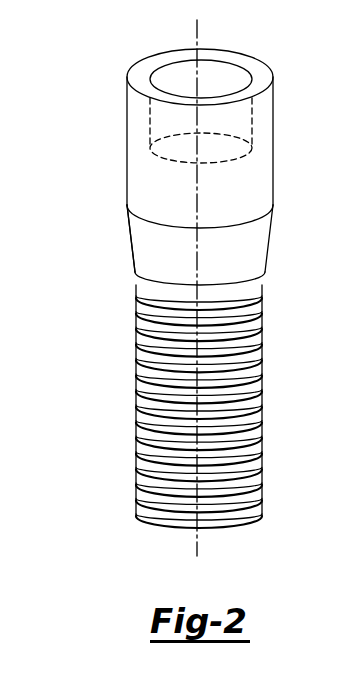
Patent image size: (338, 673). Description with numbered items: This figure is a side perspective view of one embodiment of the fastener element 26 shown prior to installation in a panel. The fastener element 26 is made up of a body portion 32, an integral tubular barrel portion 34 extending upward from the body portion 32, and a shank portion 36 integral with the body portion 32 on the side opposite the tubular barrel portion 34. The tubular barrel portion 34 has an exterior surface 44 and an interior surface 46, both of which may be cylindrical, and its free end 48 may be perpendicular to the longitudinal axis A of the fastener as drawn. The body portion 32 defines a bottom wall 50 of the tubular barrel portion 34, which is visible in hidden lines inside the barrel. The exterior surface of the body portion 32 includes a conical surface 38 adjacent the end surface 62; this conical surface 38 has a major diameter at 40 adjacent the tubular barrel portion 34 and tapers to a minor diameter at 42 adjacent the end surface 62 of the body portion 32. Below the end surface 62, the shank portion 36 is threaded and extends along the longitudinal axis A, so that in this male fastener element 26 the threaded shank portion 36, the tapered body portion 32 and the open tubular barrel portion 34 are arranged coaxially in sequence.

The fastener element 26 is at (70, 165).
The body portion 32 is at (118, 200).
The tubular barrel portion 34 is at (296, 105).
The shank portion 36 is at (137, 386).
The conical surface 38 is at (170, 255).
The major diameter 40 is at (273, 205).
The minor diameter 42 is at (137, 263).
The exterior surface 44 is at (127, 95).
The interior surface 46 is at (231, 72).
The free end 48 is at (159, 58).
The bottom wall 50 is at (153, 125).
The end surface 62 is at (261, 277).
The longitudinal axis A is at (197, 546).